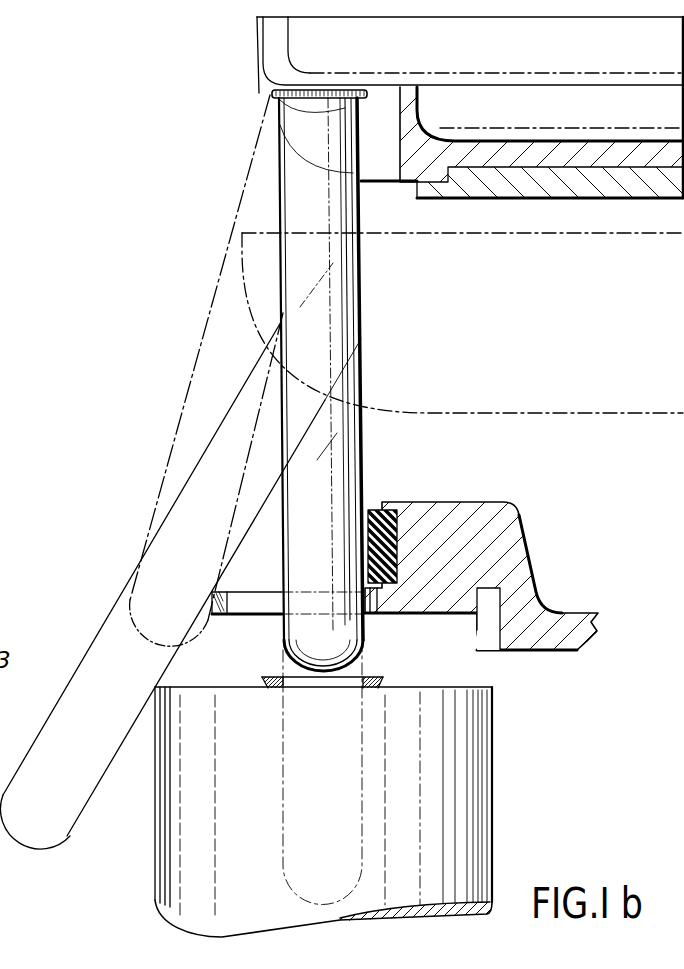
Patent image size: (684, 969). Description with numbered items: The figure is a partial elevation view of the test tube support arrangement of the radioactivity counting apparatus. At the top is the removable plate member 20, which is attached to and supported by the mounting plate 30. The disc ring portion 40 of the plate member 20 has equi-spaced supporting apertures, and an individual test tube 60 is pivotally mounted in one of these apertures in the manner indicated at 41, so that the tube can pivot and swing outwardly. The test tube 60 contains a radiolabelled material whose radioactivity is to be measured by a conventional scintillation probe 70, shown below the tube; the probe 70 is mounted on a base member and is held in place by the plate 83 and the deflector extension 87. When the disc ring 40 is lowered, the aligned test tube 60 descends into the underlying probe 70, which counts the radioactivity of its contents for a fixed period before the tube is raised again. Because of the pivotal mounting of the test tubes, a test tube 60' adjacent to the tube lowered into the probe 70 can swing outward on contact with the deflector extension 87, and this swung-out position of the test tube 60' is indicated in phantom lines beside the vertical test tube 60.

The plate member 20 is at (410, 147).
The mounting plate 30 is at (512, 192).
The disc ring portion 40 is at (262, 60).
The pivotal mounting 41 is at (272, 84).
The test tube 60 is at (345, 384).
The adjacent test tube 60' is at (178, 370).
The scintillation probe 70 is at (490, 781).
The plate 83 is at (510, 523).
The deflector extension 87 is at (243, 608).